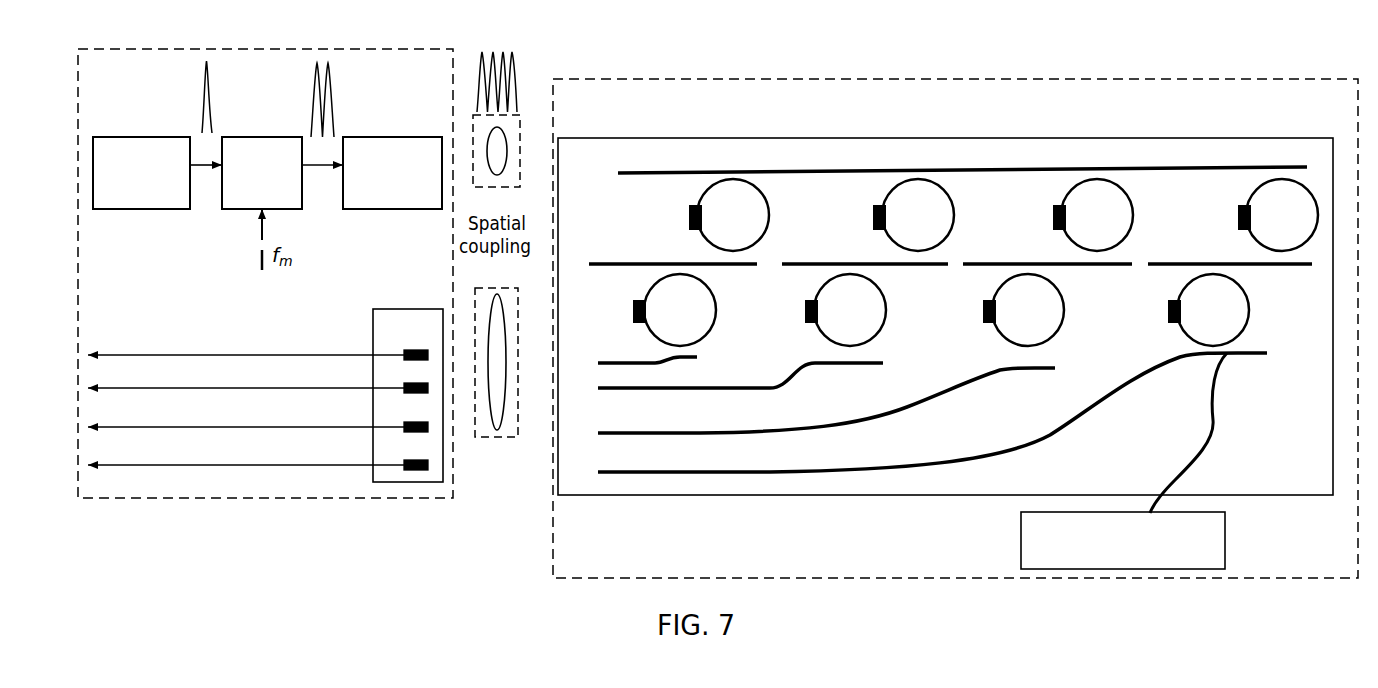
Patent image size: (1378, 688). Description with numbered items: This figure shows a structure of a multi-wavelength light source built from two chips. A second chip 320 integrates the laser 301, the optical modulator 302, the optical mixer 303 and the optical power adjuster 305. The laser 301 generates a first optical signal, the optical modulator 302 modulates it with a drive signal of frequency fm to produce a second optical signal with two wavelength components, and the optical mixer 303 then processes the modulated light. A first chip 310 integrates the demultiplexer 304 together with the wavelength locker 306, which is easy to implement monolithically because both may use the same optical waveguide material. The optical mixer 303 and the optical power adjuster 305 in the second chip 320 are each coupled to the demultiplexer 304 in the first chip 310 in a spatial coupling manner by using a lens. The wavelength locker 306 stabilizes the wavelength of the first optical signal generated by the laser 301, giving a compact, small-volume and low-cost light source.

The second chip 320 is at (263, 49).
The laser 301 is at (110, 137).
The optical modulator 302 is at (240, 137).
The optical mixer 303 is at (377, 137).
The optical power adjuster 305 is at (382, 308).
The first chip 310 is at (988, 79).
The optical demultiplexer 304 is at (973, 138).
The wavelength locker 306 is at (1225, 543).